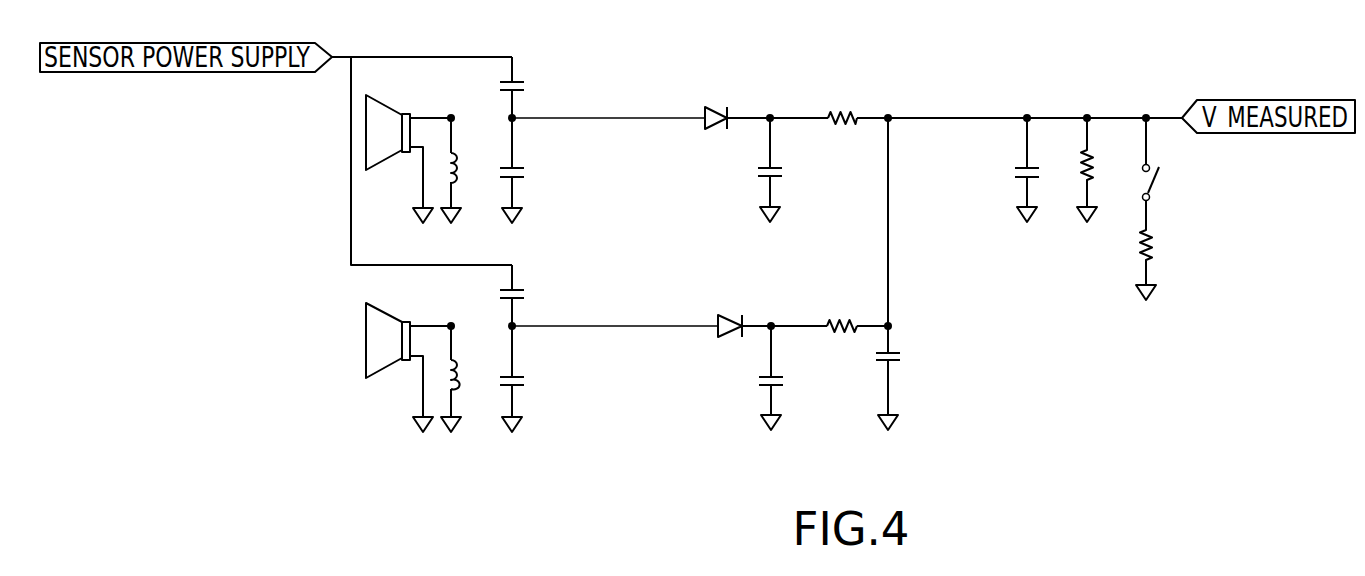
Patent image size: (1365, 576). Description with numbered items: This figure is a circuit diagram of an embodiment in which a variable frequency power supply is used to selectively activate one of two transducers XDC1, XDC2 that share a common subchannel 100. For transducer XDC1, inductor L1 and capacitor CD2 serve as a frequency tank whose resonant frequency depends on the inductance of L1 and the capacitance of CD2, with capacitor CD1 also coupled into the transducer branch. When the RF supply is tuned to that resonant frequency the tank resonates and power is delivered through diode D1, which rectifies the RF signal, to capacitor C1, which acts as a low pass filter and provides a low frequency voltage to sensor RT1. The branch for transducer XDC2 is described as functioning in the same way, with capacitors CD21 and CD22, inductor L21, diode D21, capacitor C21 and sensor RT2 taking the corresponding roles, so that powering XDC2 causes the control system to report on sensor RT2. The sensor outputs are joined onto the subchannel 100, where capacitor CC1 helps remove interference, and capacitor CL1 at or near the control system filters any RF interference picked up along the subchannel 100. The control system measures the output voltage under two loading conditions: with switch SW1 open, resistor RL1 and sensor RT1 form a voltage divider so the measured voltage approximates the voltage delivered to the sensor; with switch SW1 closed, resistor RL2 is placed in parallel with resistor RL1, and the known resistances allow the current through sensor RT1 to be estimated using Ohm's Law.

The subchannel 100 is at (990, 116).
The transducer XDC1 is at (404, 159).
The transducer XDC2 is at (399, 367).
The inductor L1 is at (465, 170).
The second inductor L21 is at (472, 379).
The capacitor CD1 is at (528, 86).
The capacitor CD2 is at (528, 170).
The capacitor CD21 is at (535, 293).
The capacitor CD22 is at (535, 379).
The diode D1 is at (713, 105).
The second diode D21 is at (742, 313).
The capacitor C1 is at (780, 170).
The capacitor C21 is at (787, 378).
The sensor RT1 is at (849, 101).
The sensor RT2 is at (848, 310).
The capacitor CC1 is at (905, 378).
The capacitor CL1 is at (1041, 170).
The resistor RL1 is at (1105, 170).
The resistor RL2 is at (1164, 251).
The switch SW1 is at (1177, 159).